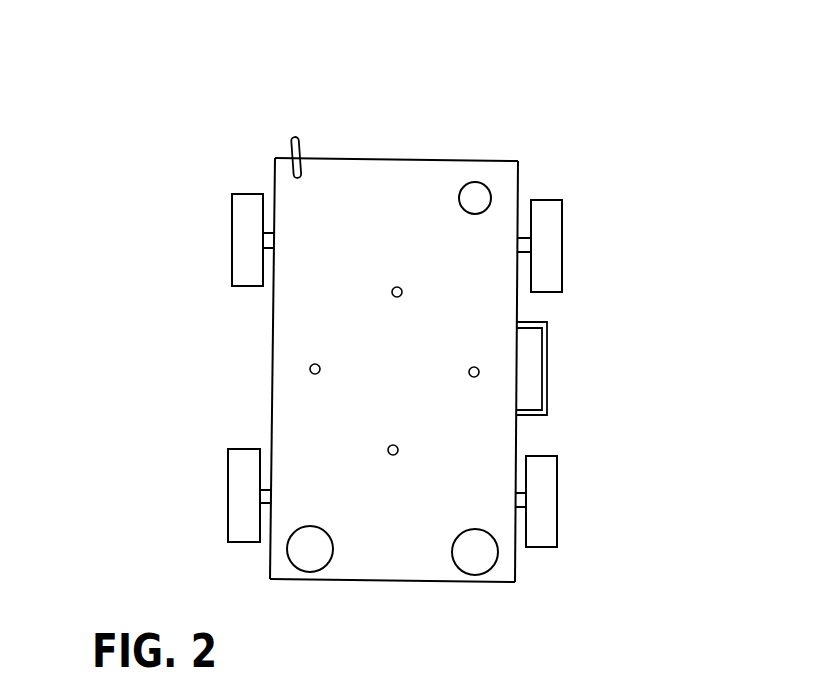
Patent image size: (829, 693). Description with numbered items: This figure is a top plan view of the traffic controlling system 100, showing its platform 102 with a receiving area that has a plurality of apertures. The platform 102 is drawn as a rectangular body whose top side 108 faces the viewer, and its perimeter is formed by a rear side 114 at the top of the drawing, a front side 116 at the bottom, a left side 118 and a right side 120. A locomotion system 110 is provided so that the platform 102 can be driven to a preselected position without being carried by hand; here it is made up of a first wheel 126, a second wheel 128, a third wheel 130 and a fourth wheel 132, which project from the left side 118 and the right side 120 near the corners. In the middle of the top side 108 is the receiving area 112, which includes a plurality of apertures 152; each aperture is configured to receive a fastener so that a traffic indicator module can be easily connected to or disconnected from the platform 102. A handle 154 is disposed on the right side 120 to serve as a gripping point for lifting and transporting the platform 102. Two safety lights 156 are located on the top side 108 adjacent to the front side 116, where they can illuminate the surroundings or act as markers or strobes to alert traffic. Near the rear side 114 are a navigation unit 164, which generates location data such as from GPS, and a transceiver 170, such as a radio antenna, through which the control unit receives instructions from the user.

The traffic controlling system 100 is at (228, 103).
The platform 102 is at (518, 159).
The top side 108 is at (342, 276).
The locomotion system 110 is at (395, 370).
The receiving area 112 is at (403, 390).
The rear side 114 is at (360, 157).
The front side 116 is at (405, 583).
The left side 118 is at (272, 368).
The right side 120 is at (518, 427).
The first wheel 126 is at (563, 222).
The second wheel 128 is at (558, 478).
The third wheel 130 is at (228, 472).
The fourth wheel 132 is at (232, 215).
The plurality of apertures 152 is at (403, 292).
The handle 154 is at (548, 370).
The safety light 156 is at (290, 554).
The navigation unit 164 is at (463, 181).
The transceiver 170 is at (289, 139).